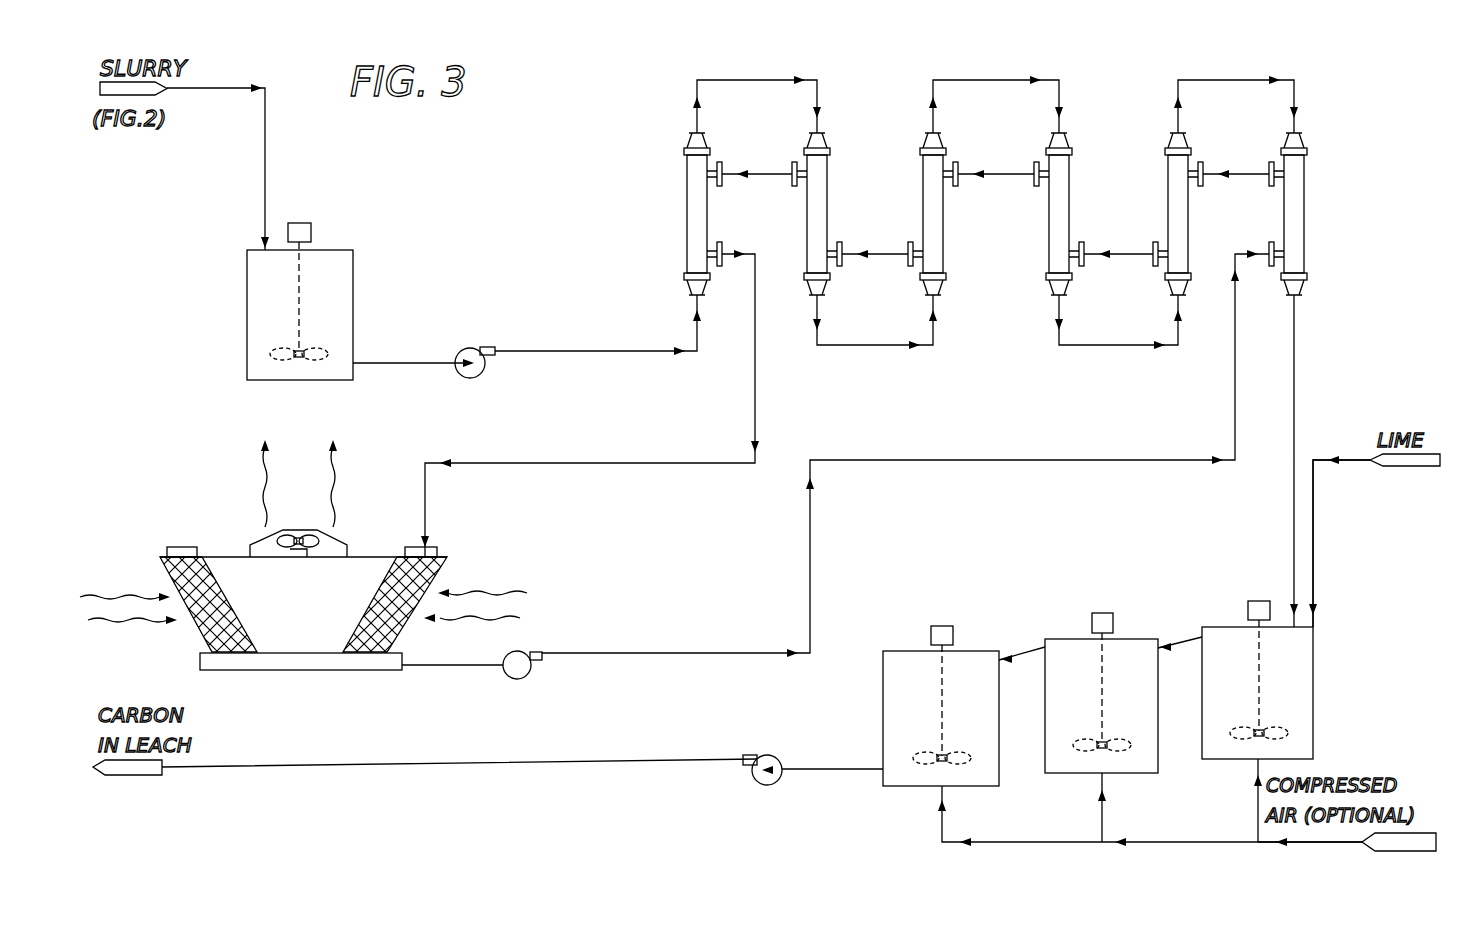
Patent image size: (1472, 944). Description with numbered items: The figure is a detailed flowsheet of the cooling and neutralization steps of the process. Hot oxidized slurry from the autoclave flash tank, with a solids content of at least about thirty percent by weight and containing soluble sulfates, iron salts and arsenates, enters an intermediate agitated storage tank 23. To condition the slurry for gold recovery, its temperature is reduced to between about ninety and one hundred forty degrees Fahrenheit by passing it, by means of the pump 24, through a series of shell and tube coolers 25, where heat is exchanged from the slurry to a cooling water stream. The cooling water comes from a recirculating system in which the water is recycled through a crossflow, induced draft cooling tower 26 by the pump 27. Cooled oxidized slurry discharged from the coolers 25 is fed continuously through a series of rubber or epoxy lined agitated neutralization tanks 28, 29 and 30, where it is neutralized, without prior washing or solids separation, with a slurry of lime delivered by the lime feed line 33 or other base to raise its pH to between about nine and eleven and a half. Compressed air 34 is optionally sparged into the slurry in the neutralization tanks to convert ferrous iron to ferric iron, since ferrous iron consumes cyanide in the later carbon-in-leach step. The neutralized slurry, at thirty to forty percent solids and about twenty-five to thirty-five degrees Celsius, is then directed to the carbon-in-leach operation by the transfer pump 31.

The intermediate agitated storage tank 23 is at (353, 250).
The pump 24 is at (481, 375).
The shell and tube coolers 25 is at (684, 152).
The crossflow, induced draft cooling tower 26 is at (447, 557).
The pump 27 is at (528, 677).
The agitated neutralization tank 28 is at (1205, 627).
The agitated neutralization tank 29 is at (1047, 639).
The agitated neutralization tank 30 is at (883, 651).
The transfer pump 31 is at (767, 785).
The lime feed line 33 is at (1313, 538).
The compressed air 34 is at (1285, 843).